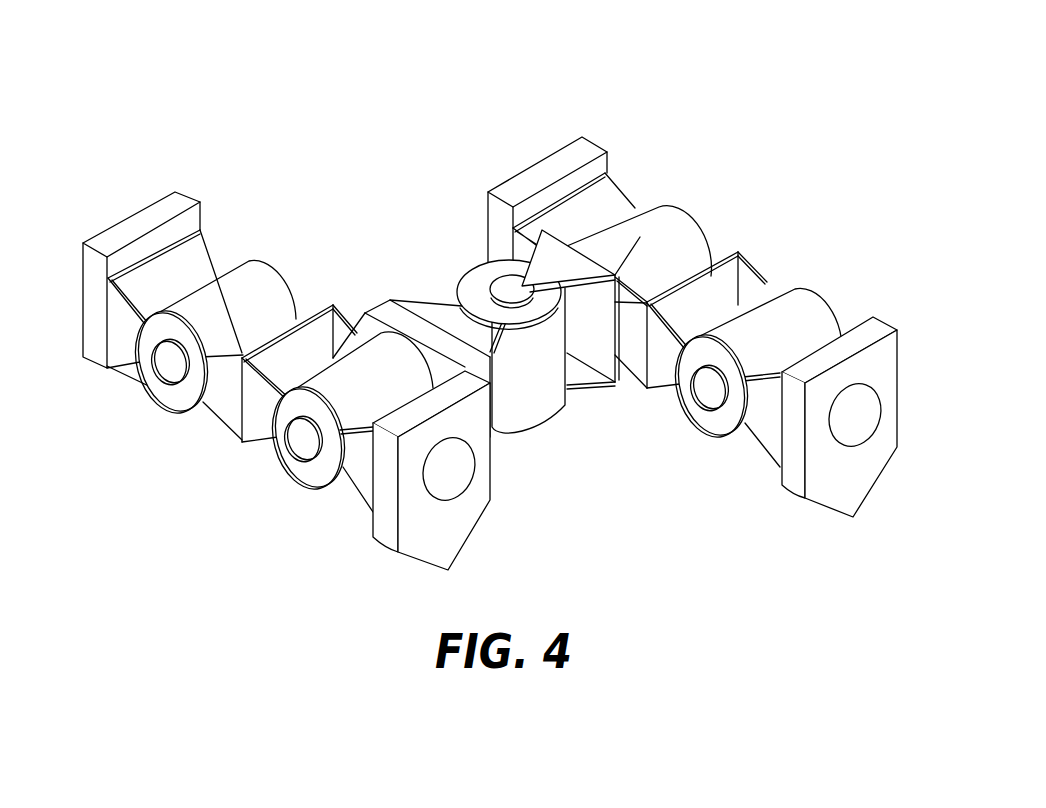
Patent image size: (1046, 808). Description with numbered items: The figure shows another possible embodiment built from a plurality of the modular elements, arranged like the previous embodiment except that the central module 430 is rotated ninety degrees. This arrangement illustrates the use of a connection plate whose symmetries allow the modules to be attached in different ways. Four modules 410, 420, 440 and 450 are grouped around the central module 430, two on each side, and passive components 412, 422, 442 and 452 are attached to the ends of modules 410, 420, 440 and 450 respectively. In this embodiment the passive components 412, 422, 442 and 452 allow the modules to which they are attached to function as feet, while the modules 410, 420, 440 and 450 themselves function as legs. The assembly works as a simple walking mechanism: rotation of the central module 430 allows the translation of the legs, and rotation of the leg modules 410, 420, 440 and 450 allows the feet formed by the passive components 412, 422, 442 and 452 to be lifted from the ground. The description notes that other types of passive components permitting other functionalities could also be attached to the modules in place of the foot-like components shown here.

The module 410 is at (213, 305).
The passive component 412 is at (182, 200).
The module 420 is at (389, 435).
The passive component 422 is at (472, 510).
The central module 430 is at (463, 258).
The module 440 is at (627, 217).
The passive component 442 is at (557, 158).
The module 450 is at (772, 408).
The passive component 452 is at (825, 498).